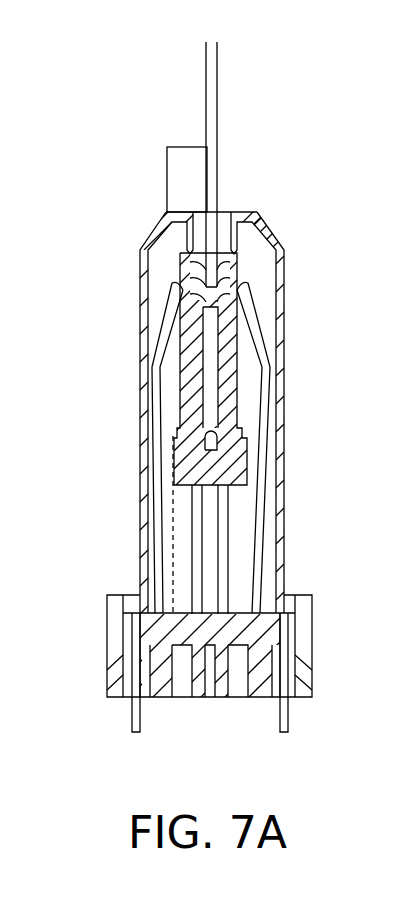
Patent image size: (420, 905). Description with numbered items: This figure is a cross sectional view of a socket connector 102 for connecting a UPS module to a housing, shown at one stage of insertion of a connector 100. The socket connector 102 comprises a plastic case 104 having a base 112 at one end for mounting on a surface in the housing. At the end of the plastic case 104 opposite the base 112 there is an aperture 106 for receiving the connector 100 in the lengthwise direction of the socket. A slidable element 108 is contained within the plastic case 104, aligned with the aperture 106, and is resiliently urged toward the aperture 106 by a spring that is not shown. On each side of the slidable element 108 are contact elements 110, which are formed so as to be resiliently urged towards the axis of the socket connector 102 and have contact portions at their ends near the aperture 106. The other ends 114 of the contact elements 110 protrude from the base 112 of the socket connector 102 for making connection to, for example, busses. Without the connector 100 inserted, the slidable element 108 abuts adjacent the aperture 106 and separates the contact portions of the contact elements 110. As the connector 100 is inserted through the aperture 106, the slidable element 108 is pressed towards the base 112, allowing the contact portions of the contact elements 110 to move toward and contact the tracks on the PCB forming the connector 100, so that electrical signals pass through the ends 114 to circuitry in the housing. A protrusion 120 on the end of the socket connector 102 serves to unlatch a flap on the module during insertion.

The connector 100 is at (217, 60).
The socket connector 102 is at (289, 329).
The plastic case 104 is at (273, 237).
The aperture 106 is at (240, 184).
The slidable element 108 is at (237, 403).
The contact elements 110 is at (163, 333).
The base 112 is at (210, 708).
The ends of the contact elements 114 is at (132, 713).
The protrusion 120 is at (183, 178).